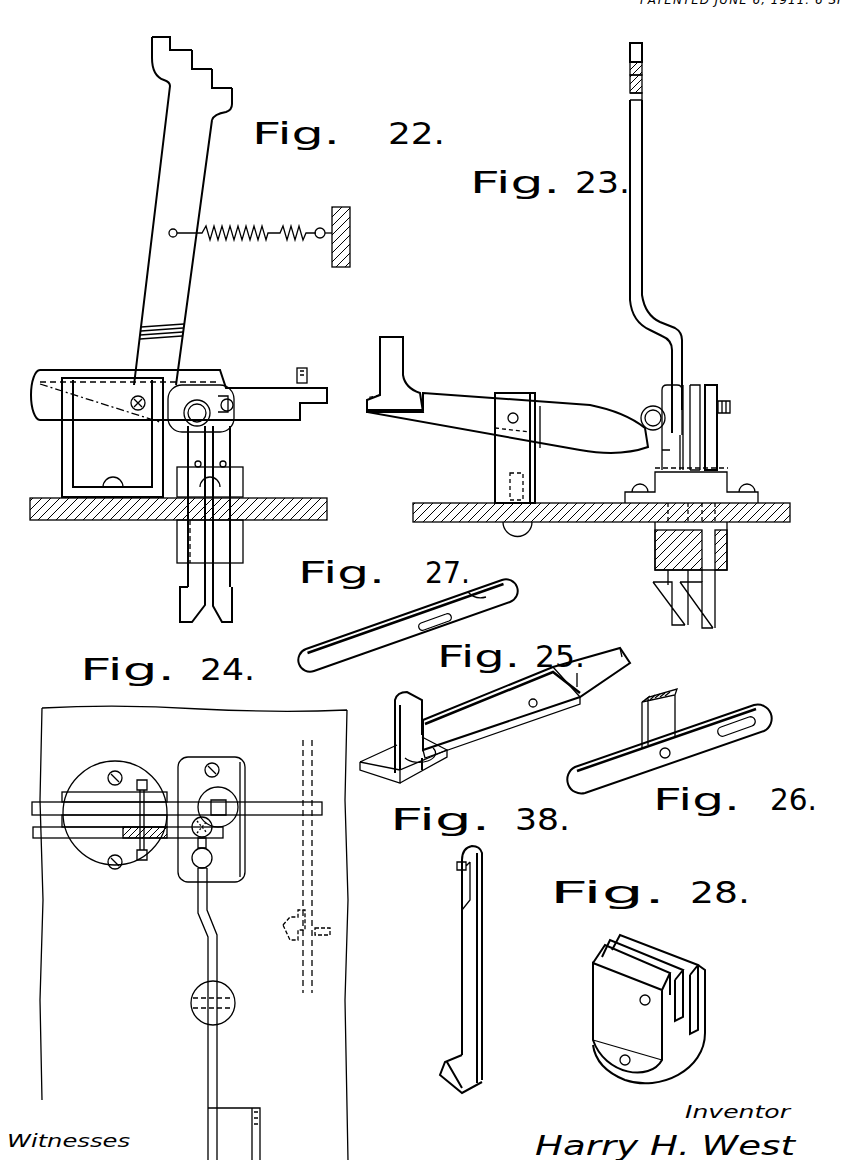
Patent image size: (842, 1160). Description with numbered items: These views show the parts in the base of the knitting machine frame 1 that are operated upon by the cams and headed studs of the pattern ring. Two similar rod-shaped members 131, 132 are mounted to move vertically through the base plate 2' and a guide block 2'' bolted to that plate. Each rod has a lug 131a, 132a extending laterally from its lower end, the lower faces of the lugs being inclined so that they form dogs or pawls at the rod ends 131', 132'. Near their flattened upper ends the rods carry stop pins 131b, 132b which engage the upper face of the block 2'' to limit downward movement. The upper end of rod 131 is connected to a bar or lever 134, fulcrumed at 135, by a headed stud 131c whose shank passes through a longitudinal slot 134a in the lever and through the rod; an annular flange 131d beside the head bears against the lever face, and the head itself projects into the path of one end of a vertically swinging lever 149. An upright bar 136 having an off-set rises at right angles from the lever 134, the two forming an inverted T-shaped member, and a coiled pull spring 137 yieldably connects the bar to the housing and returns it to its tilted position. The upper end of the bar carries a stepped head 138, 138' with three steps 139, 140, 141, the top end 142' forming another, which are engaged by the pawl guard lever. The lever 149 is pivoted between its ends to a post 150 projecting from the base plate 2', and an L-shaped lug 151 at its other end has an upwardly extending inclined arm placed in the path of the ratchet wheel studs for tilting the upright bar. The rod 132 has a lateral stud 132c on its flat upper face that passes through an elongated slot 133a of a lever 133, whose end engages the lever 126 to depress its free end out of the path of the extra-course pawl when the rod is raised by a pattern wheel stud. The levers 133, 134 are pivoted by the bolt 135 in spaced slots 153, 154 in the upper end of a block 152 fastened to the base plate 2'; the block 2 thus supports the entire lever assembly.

In FIG. 22, the frame 1 is at (346, 241).
In FIG. 24, the bracket block 2 is at (221, 810).
In FIG. 22, the base plate 2' is at (178, 503).
In FIG. 23, the base plate 2' is at (601, 504).
In FIG. 22, the guide block 2'' is at (225, 515).
In FIG. 23, the guide block 2'' is at (695, 517).
In FIG. 22, the lever 126 is at (302, 368).
In FIG. 22, the rod 131 is at (170, 506).
In FIG. 23, the rod 131 is at (655, 505).
In FIG. 24, the rod 131 is at (239, 830).
In FIG. 22, the lug 131a is at (180, 612).
In FIG. 22, the pin 131b is at (195, 463).
In FIG. 23, the pin 131b is at (670, 452).
In FIG. 22, the headed stud 131c is at (201, 407).
In FIG. 23, the headed stud 131c is at (648, 408).
In FIG. 24, the headed stud 131c is at (195, 872).
In FIG. 23, the annular flange 131d is at (672, 388).
In FIG. 24, the annular flange 131d is at (213, 848).
In FIG. 23, the needle bar point 131' is at (656, 606).
In FIG. 22, the rod 132 is at (243, 508).
In FIG. 23, the rod 132 is at (725, 506).
In FIG. 24, the rod 132 is at (241, 805).
In FIG. 38, the rod 132 is at (450, 964).
In FIG. 22, the lug 132a is at (230, 612).
In FIG. 38, the lug 132a is at (450, 1089).
In FIG. 22, the pin 132b is at (226, 463).
In FIG. 23, the pin 132b is at (718, 463).
In FIG. 22, the lateral stud 132c is at (225, 402).
In FIG. 24, the lateral stud 132c is at (213, 812).
In FIG. 38, the lateral stud 132c is at (460, 869).
In FIG. 23, the second bar point 132' is at (693, 619).
In FIG. 22, the lever 133 is at (312, 389).
In FIG. 23, the lever 133 is at (718, 391).
In FIG. 27, the lever 133 is at (358, 647).
In FIG. 24, the lever 133 is at (93, 806).
In FIG. 22, the elongated slot 133a is at (233, 405).
In FIG. 27, the elongated slot 133a is at (455, 620).
In FIG. 22, the bar or lever 134 is at (174, 397).
In FIG. 26, the bar or lever 134 is at (702, 748).
In FIG. 26, the slot 134a is at (749, 724).
In FIG. 22, the bolt 135 is at (133, 398).
In FIG. 23, the bolt 135 is at (731, 407).
In FIG. 24, the bolt 135 is at (141, 860).
In FIG. 22, the upright bar 136 is at (157, 242).
In FIG. 23, the upright bar 136 is at (642, 259).
In FIG. 24, the upright bar 136 is at (123, 840).
In FIG. 22, the coiled pull spring 137 is at (233, 229).
In FIG. 22, the stepped head 138 is at (179, 75).
In FIG. 23, the lever head 138' is at (614, 119).
In FIG. 22, the step 139 is at (227, 91).
In FIG. 23, the step 139 is at (642, 98).
In FIG. 22, the step 140 is at (202, 70).
In FIG. 23, the step 140 is at (642, 85).
In FIG. 22, the step 141 is at (180, 53).
In FIG. 23, the step 141 is at (642, 68).
In FIG. 22, the top or outer end 142' is at (177, 33).
In FIG. 23, the top or outer end 142' is at (655, 45).
In FIG. 23, the lever 149 is at (551, 402).
In FIG. 24, the lever 149 is at (213, 960).
In FIG. 25, the lever 149 is at (513, 714).
In FIG. 23, the post 150 is at (497, 460).
In FIG. 24, the post 150 is at (225, 1018).
In FIG. 23, the L-shaped lug 151 is at (380, 338).
In FIG. 24, the L-shaped lug 151 is at (260, 1150).
In FIG. 25, the L-shaped lug 151 is at (408, 705).
In FIG. 22, the block 152 is at (112, 437).
In FIG. 24, the block 152 is at (80, 797).
In FIG. 28, the block 152 is at (649, 1014).
In FIG. 28, the slot 153 is at (677, 1013).
In FIG. 28, the slot 154 is at (697, 998).